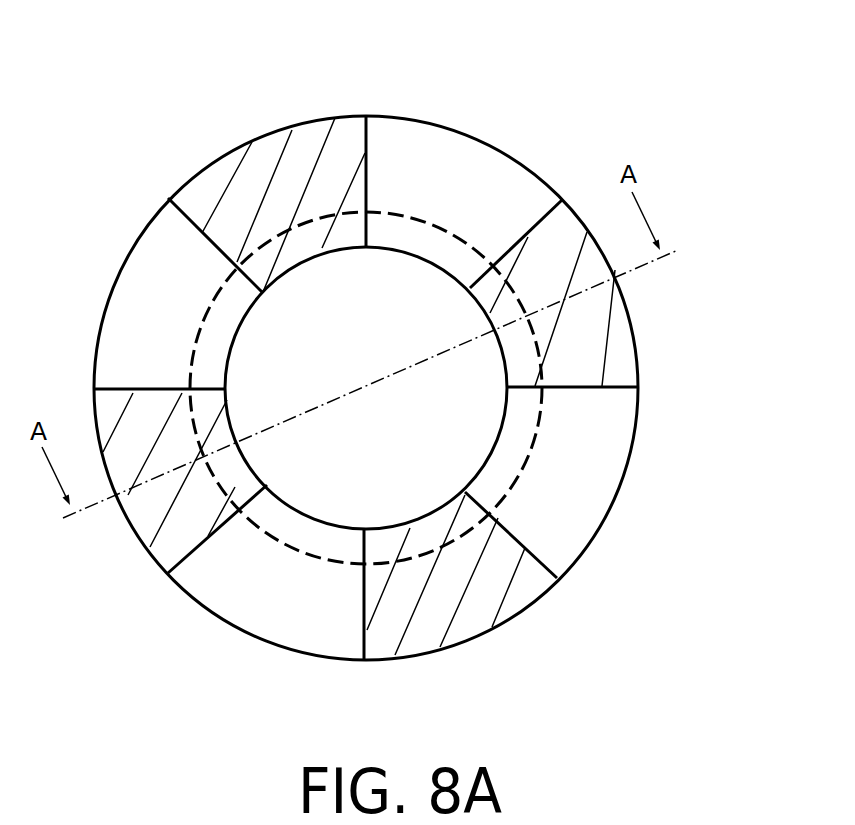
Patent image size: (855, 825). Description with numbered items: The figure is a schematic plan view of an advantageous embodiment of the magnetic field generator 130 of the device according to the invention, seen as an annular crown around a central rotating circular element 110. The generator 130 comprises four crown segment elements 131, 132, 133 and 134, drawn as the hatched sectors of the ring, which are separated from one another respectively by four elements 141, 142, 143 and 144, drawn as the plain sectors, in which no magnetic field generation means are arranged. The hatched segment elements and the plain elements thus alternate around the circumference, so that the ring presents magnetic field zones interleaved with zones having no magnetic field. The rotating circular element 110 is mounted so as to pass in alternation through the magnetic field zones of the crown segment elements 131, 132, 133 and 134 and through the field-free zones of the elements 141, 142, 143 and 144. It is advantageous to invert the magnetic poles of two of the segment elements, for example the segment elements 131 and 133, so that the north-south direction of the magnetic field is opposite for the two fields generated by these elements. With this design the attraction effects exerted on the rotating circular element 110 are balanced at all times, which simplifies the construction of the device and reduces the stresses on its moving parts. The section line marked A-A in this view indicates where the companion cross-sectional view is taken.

The rotating circular element 110 is at (383, 368).
The magnetic field generator 130 is at (494, 127).
The crown segment element 131 is at (600, 330).
The crown segment element 132 is at (470, 607).
The crown segment element 133 is at (150, 513).
The crown segment element 134 is at (258, 168).
The element without magnetic field generation means 141 is at (560, 467).
The element without magnetic field generation means 142 is at (270, 602).
The element without magnetic field generation means 143 is at (140, 305).
The element without magnetic field generation means 144 is at (425, 168).